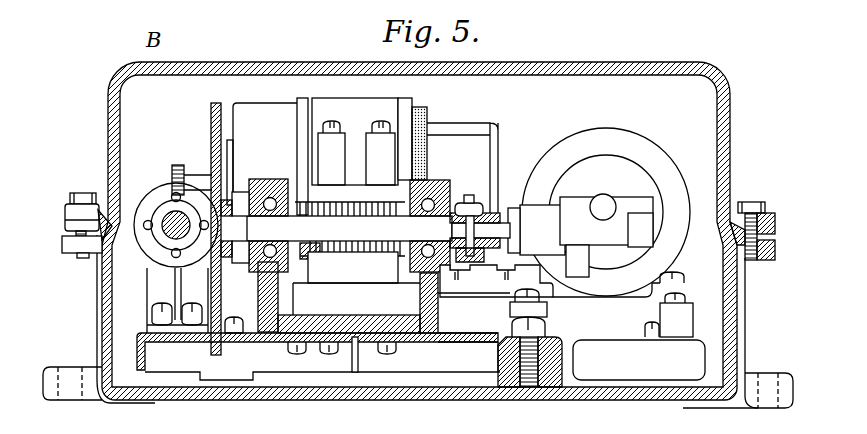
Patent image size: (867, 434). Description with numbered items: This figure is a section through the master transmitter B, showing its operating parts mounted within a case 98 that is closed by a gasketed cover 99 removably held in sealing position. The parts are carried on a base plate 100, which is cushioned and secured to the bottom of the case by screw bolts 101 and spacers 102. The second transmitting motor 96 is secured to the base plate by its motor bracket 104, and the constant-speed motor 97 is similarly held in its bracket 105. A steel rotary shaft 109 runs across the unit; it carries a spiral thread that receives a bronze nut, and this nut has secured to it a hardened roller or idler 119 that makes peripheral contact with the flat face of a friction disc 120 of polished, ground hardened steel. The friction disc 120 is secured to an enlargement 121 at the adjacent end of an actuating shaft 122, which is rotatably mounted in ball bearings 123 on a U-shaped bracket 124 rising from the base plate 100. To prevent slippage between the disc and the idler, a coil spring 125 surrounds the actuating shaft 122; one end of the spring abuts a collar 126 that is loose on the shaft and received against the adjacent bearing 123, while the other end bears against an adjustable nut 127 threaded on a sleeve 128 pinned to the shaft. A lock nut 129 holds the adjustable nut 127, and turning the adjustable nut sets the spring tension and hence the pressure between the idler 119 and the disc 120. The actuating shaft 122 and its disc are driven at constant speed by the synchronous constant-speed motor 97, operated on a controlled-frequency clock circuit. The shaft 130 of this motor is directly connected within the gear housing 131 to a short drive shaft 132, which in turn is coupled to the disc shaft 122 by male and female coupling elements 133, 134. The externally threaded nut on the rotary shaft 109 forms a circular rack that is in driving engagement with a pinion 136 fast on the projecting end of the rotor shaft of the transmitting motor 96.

The second transmitting motor 96 is at (262, 112).
The constant-speed motor 97 is at (640, 138).
The case 98 is at (738, 306).
The gasketed cover 99 is at (728, 140).
The base plate 100 is at (634, 347).
The screw bolts 101 is at (545, 332).
The spacers 102 is at (540, 355).
The motor bracket 104 is at (362, 98).
The bracket 105 is at (641, 294).
The rotary shaft 109 is at (165, 230).
The roller or idler 119 is at (160, 203).
The friction disc 120 is at (211, 123).
The enlargement 121 is at (238, 190).
The actuating shaft 122 is at (379, 285).
The ball bearings 123 is at (272, 180).
The U-shaped bracket 124 is at (305, 322).
The coil spring 125 is at (348, 262).
The collar 126 is at (396, 206).
The adjustable nut 127 is at (322, 200).
The sleeve 128 is at (316, 245).
The lock nut 129 is at (364, 250).
The shaft 130 is at (605, 200).
The gear housing 131 is at (637, 213).
The short drive shaft 132 is at (503, 238).
The male coupling element 133 is at (492, 194).
The female coupling element 134 is at (467, 195).
The pinion 136 is at (179, 165).